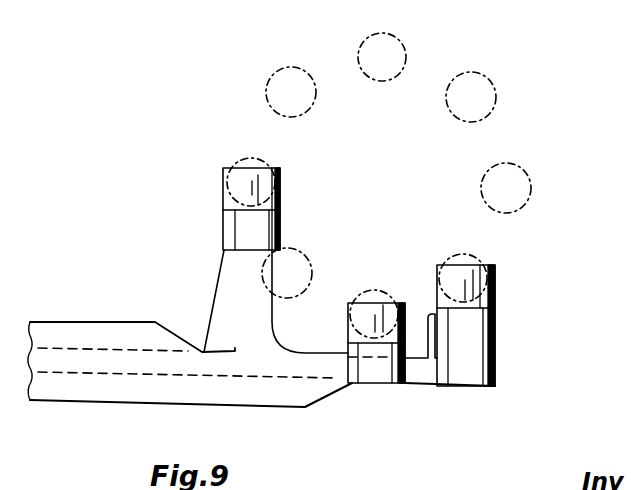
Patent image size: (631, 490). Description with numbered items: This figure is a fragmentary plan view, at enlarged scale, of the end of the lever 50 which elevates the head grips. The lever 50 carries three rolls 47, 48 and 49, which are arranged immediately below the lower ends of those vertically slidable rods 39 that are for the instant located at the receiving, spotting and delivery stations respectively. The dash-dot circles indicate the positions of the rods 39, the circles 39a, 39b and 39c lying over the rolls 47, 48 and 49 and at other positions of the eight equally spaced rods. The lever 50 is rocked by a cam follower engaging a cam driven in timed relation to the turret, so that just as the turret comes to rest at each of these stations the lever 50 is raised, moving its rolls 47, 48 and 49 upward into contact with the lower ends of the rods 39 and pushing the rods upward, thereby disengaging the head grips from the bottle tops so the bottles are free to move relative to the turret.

The vertically slidable rod 39 is at (340, 229).
The aperture 39a is at (376, 300).
The aperture 39b is at (514, 187).
The aperture 39c is at (250, 158).
The roll 47 is at (354, 306).
The roll 48 is at (497, 298).
The roll 49 is at (246, 248).
The lever 50 is at (347, 375).